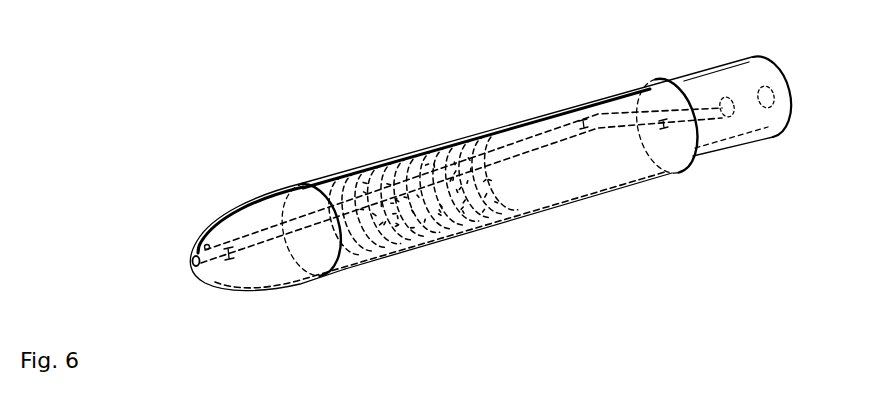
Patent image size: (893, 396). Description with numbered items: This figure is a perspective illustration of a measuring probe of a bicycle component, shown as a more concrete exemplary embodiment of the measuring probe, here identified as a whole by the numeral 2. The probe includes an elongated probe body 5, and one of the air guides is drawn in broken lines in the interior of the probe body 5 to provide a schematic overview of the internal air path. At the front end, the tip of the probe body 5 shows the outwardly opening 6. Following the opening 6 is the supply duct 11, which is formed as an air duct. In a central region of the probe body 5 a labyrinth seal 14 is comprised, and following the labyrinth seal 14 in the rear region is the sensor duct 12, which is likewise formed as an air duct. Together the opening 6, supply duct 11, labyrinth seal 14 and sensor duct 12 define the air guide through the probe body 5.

The device 2 is at (193, 83).
The probe body 5 is at (213, 222).
The opening 6 is at (186, 265).
The supply duct 11 is at (249, 245).
The sensor duct 12 is at (553, 138).
The labyrinth seal 14 is at (409, 143).